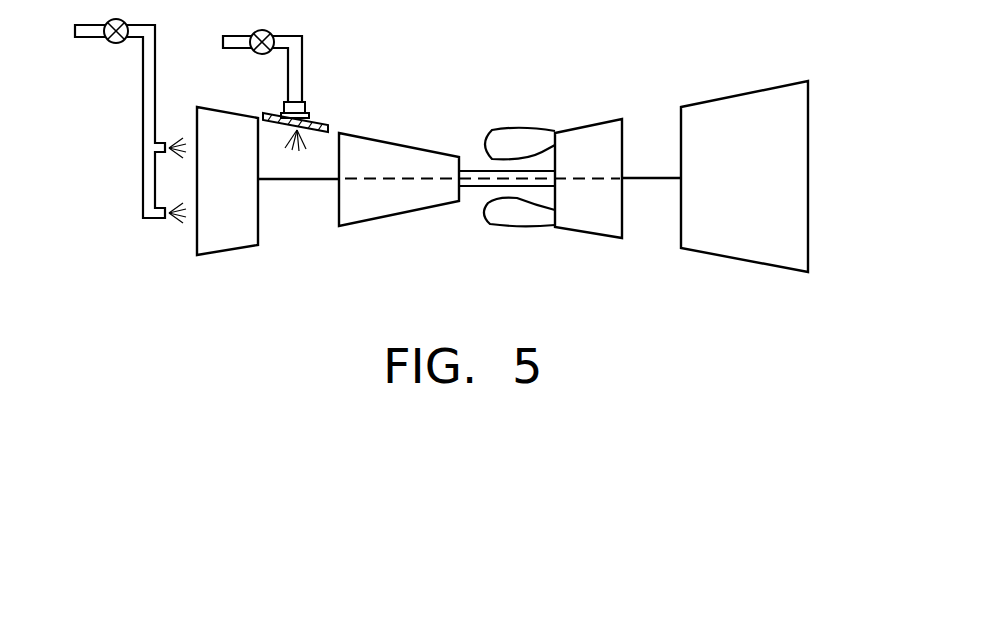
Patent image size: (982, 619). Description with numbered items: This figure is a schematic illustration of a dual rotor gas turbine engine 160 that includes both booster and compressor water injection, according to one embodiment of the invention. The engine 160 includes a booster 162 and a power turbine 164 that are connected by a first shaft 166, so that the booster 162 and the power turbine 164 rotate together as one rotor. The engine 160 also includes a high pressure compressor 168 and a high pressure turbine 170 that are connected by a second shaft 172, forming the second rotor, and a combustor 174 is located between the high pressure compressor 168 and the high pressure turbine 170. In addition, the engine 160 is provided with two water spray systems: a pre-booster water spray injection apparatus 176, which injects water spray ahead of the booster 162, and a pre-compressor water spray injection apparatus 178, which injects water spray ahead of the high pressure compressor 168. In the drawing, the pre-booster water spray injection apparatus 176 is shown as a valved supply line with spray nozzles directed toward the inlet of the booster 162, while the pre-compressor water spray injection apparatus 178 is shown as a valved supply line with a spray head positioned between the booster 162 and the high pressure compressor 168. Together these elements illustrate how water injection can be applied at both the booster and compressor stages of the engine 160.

The engine 160 is at (614, 64).
The booster 162 is at (251, 248).
The power turbine 164 is at (747, 263).
The first shaft 166 is at (278, 181).
The high pressure compressor 168 is at (433, 208).
The high pressure turbine 170 is at (577, 230).
The second shaft 172 is at (472, 170).
The combustor 174 is at (510, 230).
The pre-booster water spray injection apparatus 176 is at (142, 96).
The pre-compressor water spray injection apparatus 178 is at (303, 58).